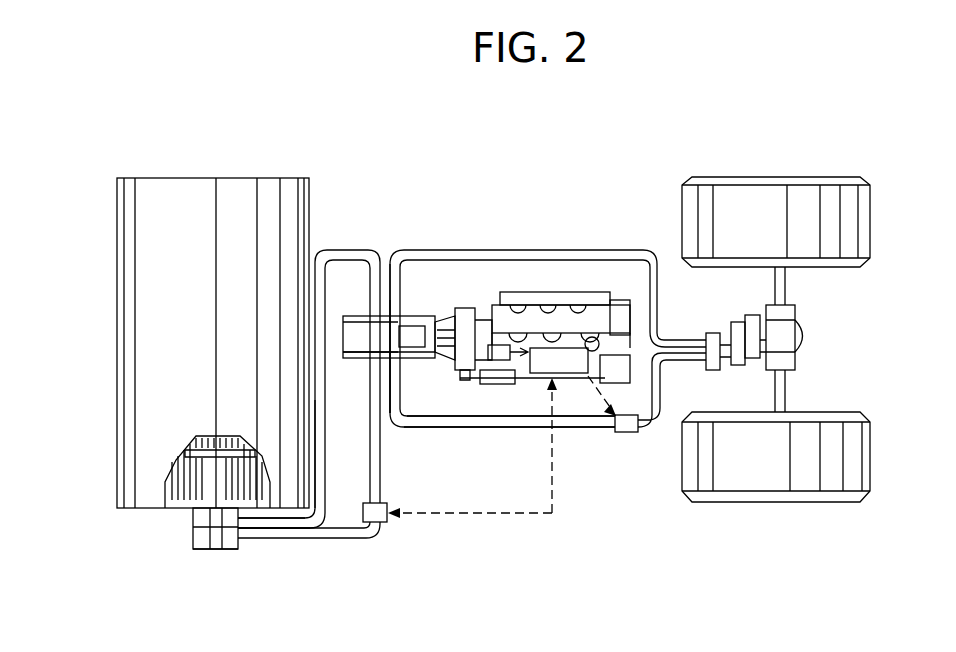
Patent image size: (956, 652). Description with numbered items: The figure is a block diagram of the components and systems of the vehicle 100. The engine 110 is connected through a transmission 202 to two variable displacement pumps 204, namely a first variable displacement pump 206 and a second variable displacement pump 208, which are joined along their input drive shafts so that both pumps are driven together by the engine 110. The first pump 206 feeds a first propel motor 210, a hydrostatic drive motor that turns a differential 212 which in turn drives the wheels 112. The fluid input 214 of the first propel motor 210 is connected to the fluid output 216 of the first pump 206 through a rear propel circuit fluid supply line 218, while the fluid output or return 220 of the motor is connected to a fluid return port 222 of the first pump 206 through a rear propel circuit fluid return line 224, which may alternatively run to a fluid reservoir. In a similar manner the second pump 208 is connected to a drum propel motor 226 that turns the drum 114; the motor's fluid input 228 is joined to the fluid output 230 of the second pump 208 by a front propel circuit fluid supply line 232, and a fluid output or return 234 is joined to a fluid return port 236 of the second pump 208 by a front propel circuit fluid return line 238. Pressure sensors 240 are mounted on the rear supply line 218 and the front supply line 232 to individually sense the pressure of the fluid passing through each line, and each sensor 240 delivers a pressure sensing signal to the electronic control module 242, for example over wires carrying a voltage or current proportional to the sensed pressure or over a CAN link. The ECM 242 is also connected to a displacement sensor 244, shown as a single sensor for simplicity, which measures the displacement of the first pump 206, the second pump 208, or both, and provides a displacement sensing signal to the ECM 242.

The vehicle 100 is at (275, 92).
The engine 110 is at (540, 300).
The wheels 112 is at (760, 205).
The drum 114 is at (187, 200).
The transmission 202 is at (418, 336).
The variable displacement pumps 204 is at (389, 337).
The first variable displacement pump 206 is at (425, 358).
The second variable displacement pump 208 is at (346, 360).
The first propel motor 210 is at (736, 330).
The differential 212 is at (806, 336).
The fluid input 214 is at (699, 362).
The fluid output 216 is at (398, 354).
The rear propel circuit fluid supply line 218 is at (582, 428).
The fluid output or return 220 is at (708, 338).
The fluid return port 222 is at (412, 318).
The rear propel circuit fluid return line 224 is at (592, 250).
The drum propel motor 226 is at (210, 532).
The fluid input 228 is at (247, 545).
The fluid output 230 is at (384, 427).
The front propel circuit fluid supply line 232 is at (383, 528).
The fluid output or return 234 is at (265, 530).
The fluid return port 236 is at (363, 315).
The front propel circuit fluid return line 238 is at (332, 484).
The pressure sensors 240 is at (388, 522).
The electronic control module (ECM) 242 is at (566, 432).
The displacement sensor 244 is at (447, 318).